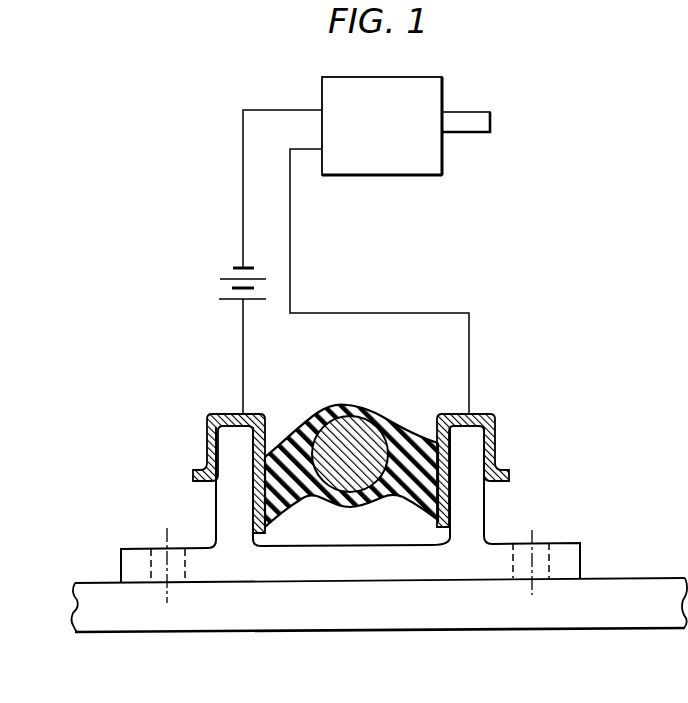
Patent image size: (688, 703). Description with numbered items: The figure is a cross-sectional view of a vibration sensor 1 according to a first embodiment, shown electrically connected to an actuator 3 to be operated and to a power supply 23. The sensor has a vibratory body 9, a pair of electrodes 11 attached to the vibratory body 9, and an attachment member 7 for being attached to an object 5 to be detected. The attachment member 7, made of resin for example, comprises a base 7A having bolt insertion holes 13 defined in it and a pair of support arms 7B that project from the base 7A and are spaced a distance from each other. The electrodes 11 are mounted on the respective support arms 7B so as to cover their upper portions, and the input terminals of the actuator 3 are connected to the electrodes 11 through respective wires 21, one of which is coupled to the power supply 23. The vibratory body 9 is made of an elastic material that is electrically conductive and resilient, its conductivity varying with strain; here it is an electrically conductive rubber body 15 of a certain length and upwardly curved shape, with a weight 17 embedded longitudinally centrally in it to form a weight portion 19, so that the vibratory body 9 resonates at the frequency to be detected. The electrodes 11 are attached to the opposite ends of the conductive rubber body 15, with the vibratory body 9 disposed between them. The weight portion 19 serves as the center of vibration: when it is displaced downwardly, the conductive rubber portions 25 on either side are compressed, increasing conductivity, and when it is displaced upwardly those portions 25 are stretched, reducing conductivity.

The vibration sensor 1 is at (361, 505).
The actuator 3 is at (455, 79).
The object 5 is at (633, 607).
The attachment member 7 is at (350, 547).
The base 7A is at (316, 570).
The support arms 7B is at (233, 503).
The vibratory body 9 is at (343, 507).
The electrodes 11 is at (222, 413).
The bolt insertion holes 13 is at (151, 563).
The conductive rubber body 15 is at (345, 408).
The weight 17 is at (352, 443).
The weight portion 19 is at (345, 507).
The wires 21 is at (243, 183).
The power supply 23 is at (227, 290).
The conductive rubber portions 25 is at (283, 497).